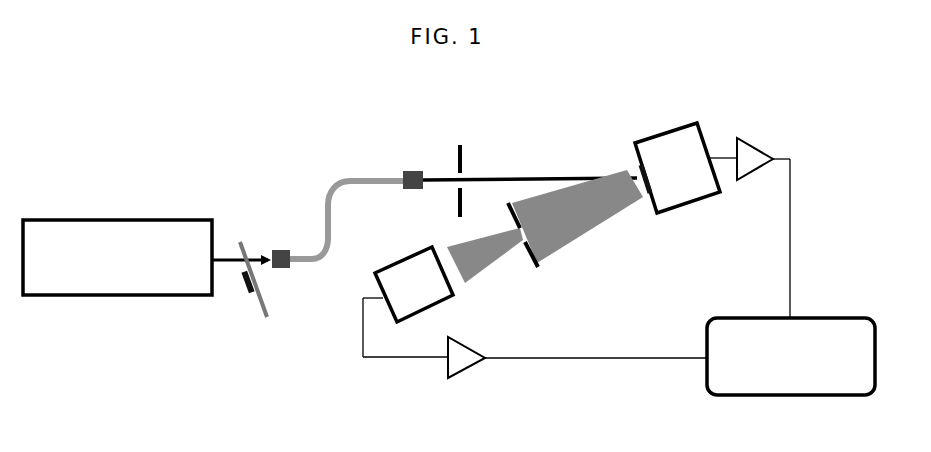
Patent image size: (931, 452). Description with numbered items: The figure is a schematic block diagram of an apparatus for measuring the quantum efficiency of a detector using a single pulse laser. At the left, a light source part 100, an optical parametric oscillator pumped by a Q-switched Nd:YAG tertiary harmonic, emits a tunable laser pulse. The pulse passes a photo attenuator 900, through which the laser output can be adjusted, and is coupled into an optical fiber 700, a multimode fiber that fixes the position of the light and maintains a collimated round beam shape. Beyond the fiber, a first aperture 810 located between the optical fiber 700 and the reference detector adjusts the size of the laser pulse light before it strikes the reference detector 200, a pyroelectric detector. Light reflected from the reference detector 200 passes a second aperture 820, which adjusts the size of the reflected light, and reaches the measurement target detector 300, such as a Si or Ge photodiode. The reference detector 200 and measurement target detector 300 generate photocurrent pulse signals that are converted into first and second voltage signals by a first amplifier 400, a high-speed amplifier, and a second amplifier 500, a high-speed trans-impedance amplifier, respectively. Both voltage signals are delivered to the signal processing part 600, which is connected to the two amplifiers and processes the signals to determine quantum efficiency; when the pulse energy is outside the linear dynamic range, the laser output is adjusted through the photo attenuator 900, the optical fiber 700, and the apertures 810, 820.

The light source part 100 is at (110, 295).
The reference detector 200 is at (667, 130).
The measurement target detector 300 is at (435, 302).
The first amplifier 400 is at (752, 143).
The second amplifier 500 is at (448, 378).
The signal processing part 600 is at (708, 395).
The optical fiber 700 is at (348, 181).
The first aperture 810 is at (468, 140).
The second aperture 820 is at (543, 267).
The photo attenuator 900 is at (258, 318).